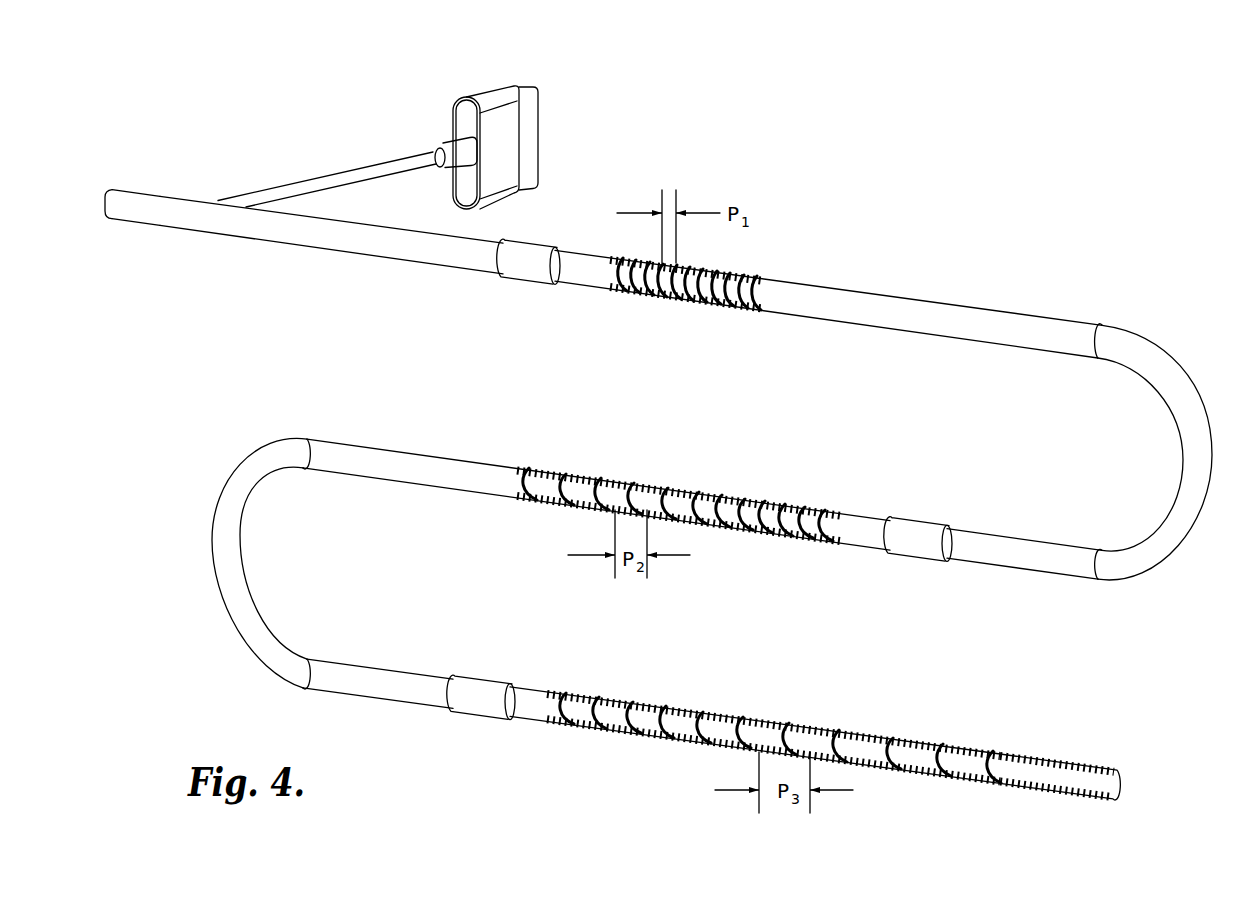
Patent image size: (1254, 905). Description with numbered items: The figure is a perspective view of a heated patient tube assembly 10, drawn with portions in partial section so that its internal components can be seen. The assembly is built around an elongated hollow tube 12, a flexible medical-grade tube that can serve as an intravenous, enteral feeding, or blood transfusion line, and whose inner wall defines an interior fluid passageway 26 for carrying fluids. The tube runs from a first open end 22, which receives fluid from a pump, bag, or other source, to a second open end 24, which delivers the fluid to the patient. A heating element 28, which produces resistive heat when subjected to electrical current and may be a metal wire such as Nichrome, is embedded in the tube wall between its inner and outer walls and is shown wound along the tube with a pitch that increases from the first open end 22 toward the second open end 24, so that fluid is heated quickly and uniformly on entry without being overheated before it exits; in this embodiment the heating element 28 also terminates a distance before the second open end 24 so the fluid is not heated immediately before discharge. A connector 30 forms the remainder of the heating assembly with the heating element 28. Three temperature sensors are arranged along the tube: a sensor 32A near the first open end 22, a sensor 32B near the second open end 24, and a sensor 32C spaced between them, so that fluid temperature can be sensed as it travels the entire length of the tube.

The heated patient tube assembly 10 is at (890, 255).
The elongated hollow tube 12 is at (336, 232).
The first open end 22 is at (88, 190).
The second open end 24 is at (1132, 782).
The interior fluid passageway 26 is at (747, 290).
The heating element 28 is at (730, 307).
The connector 30 is at (438, 107).
The temperature sensor 32A is at (530, 263).
The temperature sensor 32B is at (480, 692).
The temperature sensor 32C is at (918, 542).